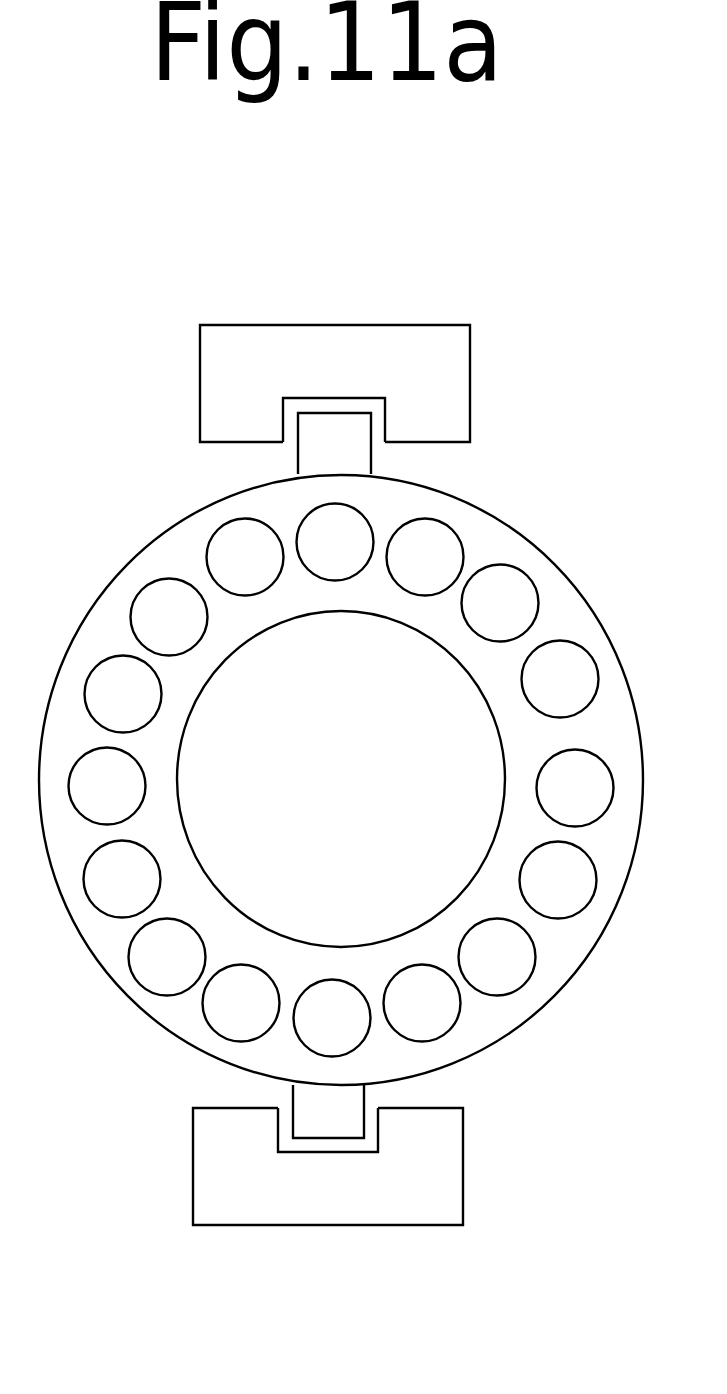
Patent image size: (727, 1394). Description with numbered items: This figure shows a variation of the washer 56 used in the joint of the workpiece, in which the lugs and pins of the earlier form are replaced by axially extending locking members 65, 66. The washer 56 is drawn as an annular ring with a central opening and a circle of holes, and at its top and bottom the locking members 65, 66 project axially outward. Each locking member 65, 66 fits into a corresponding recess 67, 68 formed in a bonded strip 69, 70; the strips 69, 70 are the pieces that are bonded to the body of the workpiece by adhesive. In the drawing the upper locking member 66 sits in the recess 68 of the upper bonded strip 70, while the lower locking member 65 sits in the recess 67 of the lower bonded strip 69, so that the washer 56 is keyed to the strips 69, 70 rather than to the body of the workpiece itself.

The washer 56 is at (509, 588).
The locking member 65 is at (334, 1122).
The locking member 66 is at (340, 428).
The recess 67 is at (305, 1152).
The recess 68 is at (298, 398).
The bonded strip 69 is at (435, 1153).
The bonded strip 70 is at (442, 398).